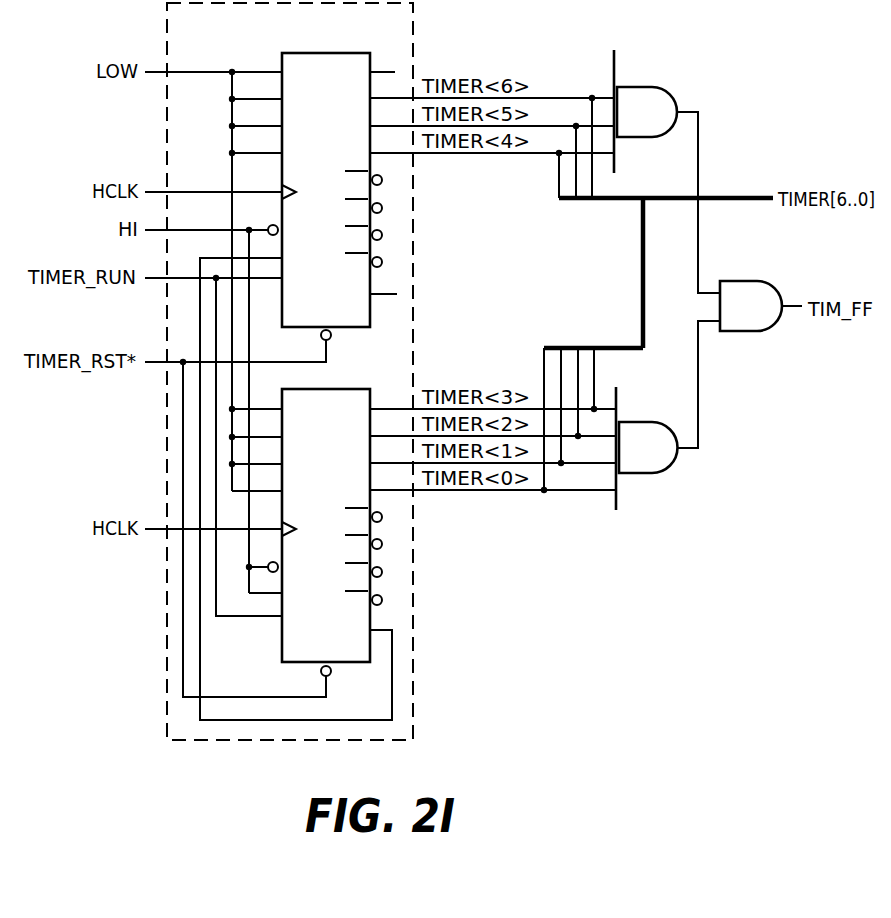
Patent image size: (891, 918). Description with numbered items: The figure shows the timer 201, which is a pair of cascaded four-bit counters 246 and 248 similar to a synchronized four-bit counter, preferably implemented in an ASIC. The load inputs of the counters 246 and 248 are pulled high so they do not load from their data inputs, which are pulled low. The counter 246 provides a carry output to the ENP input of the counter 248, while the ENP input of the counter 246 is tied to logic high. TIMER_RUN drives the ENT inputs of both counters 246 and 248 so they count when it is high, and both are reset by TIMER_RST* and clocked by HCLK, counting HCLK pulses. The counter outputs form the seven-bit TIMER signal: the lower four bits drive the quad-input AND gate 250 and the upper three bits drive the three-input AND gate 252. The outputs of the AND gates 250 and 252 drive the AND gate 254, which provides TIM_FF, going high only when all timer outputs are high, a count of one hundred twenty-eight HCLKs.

The timer 201 is at (418, 690).
The 4-bit counter 246 is at (343, 389).
The 4-bit counter 248 is at (343, 53).
The quad-input AND gate 250 is at (630, 473).
The three-input AND gate 252 is at (636, 87).
The AND gate 254 is at (772, 328).